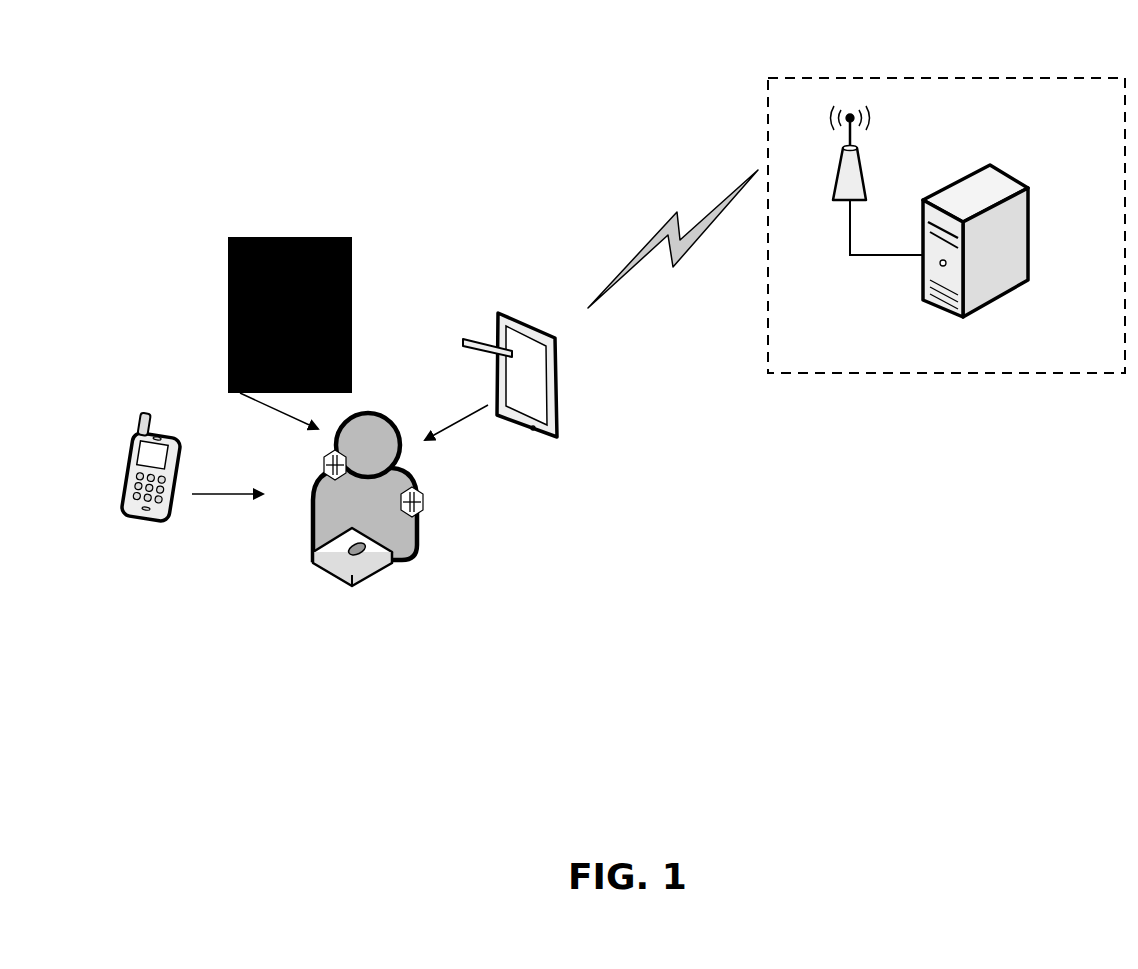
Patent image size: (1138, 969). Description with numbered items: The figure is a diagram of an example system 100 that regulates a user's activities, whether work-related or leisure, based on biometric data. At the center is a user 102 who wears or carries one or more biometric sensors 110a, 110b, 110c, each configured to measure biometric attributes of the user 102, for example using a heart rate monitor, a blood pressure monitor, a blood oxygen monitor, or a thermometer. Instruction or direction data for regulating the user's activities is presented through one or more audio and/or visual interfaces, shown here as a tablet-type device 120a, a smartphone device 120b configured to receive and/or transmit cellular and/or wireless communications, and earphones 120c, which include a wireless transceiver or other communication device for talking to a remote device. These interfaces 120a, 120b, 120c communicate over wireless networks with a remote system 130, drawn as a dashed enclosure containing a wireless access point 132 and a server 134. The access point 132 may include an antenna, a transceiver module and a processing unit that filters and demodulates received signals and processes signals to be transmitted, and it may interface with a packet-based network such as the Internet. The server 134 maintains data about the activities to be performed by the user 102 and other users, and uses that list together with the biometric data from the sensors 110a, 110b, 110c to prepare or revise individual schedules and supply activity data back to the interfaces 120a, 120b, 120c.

The system 100 is at (290, 75).
The user 102 is at (384, 454).
The biometric sensor 110a is at (422, 515).
The biometric sensor 110b is at (327, 458).
The biometric sensor 110c is at (363, 580).
The tablet-type device 120a is at (537, 316).
The smartphone device 120b is at (140, 522).
The earphones 120c is at (352, 260).
The remote system 130 is at (1015, 374).
The wireless access point 132 is at (836, 168).
The server 134 is at (922, 292).